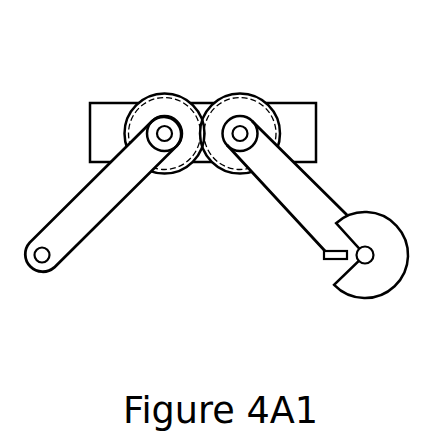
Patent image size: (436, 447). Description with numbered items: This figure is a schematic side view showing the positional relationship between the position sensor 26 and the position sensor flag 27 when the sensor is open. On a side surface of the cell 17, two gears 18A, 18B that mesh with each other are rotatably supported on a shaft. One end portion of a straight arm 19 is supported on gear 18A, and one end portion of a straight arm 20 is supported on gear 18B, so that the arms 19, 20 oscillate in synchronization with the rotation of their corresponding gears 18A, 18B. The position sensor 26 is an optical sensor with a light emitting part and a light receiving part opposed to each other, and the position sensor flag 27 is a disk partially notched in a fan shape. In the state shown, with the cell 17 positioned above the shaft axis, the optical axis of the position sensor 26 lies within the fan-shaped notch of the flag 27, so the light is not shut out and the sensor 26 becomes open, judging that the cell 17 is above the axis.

The cell 17 is at (115, 117).
The gear 18A is at (170, 94).
The gear 18B is at (265, 99).
The arm 19 is at (110, 205).
The arm 20 is at (319, 187).
The position sensor 26 is at (323, 256).
The position sensor flag 27 is at (350, 296).